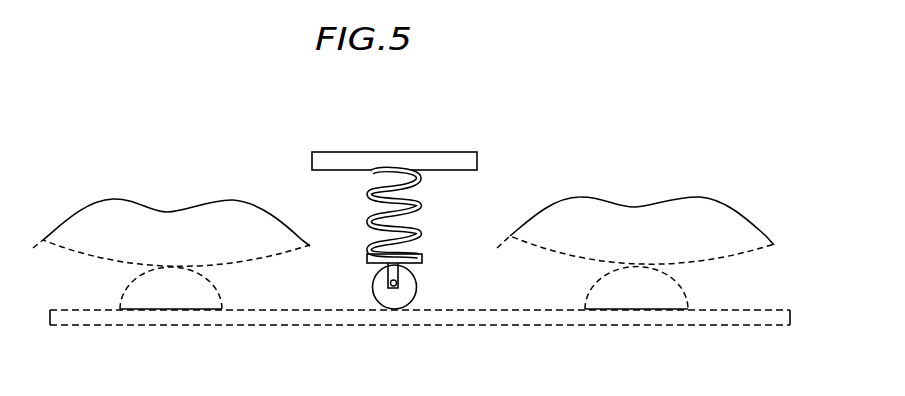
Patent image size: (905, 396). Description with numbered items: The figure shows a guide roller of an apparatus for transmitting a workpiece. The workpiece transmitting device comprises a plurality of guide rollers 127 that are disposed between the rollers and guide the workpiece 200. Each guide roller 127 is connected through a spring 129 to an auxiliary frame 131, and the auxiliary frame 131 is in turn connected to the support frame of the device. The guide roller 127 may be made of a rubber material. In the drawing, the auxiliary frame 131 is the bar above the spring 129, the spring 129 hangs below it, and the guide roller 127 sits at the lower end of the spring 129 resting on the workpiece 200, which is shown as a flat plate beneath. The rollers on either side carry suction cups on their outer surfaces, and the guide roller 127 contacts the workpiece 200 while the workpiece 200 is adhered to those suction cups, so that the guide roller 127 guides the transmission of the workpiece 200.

The guide roller 127 is at (417, 283).
The spring 129 is at (423, 217).
The auxiliary frame 131 is at (445, 153).
The workpiece 200 is at (153, 326).